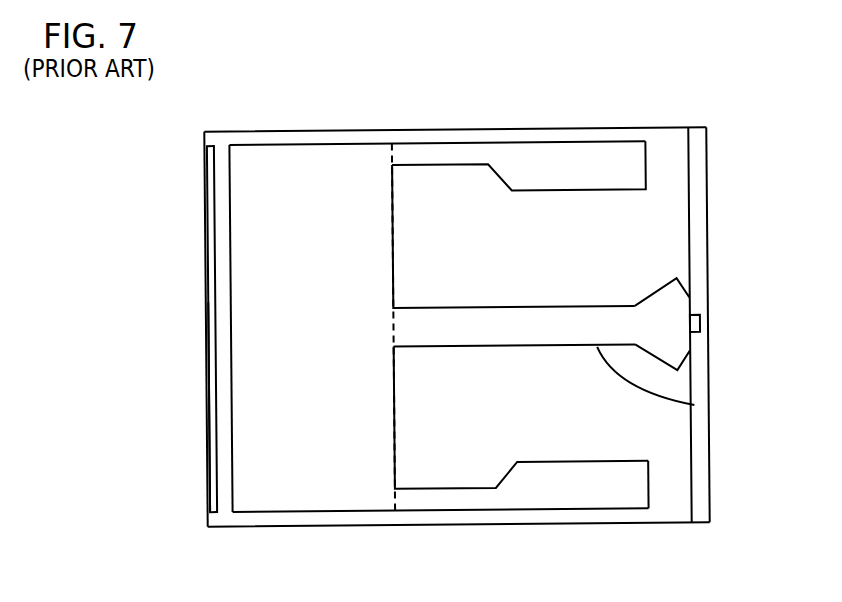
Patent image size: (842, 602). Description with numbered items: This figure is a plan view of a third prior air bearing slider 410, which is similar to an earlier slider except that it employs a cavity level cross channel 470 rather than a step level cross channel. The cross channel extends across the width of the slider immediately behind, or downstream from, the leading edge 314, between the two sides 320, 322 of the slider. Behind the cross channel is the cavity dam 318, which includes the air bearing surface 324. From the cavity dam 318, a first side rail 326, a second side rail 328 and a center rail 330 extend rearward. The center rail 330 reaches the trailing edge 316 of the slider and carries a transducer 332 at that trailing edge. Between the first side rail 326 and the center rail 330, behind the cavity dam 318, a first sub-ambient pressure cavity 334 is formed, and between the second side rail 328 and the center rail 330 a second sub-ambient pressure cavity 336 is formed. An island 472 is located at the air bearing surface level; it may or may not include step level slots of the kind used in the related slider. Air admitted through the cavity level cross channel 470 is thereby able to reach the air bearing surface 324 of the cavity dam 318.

The slider 410 is at (165, 170).
The leading edge 314 is at (207, 414).
The trailing edge 316 is at (700, 482).
The cavity dam 318 is at (230, 222).
The side 320 is at (366, 145).
The side 322 is at (337, 512).
The air bearing surface 324 is at (294, 173).
The side rail 326 is at (547, 155).
The side rail 328 is at (598, 510).
The center rail 330 is at (693, 405).
The transducer 332 is at (702, 323).
The first sub-ambient pressure cavity 334 is at (667, 220).
The second sub-ambient pressure cavity 336 is at (525, 438).
The cavity level cross channel 470 is at (219, 286).
The island 472 is at (214, 359).